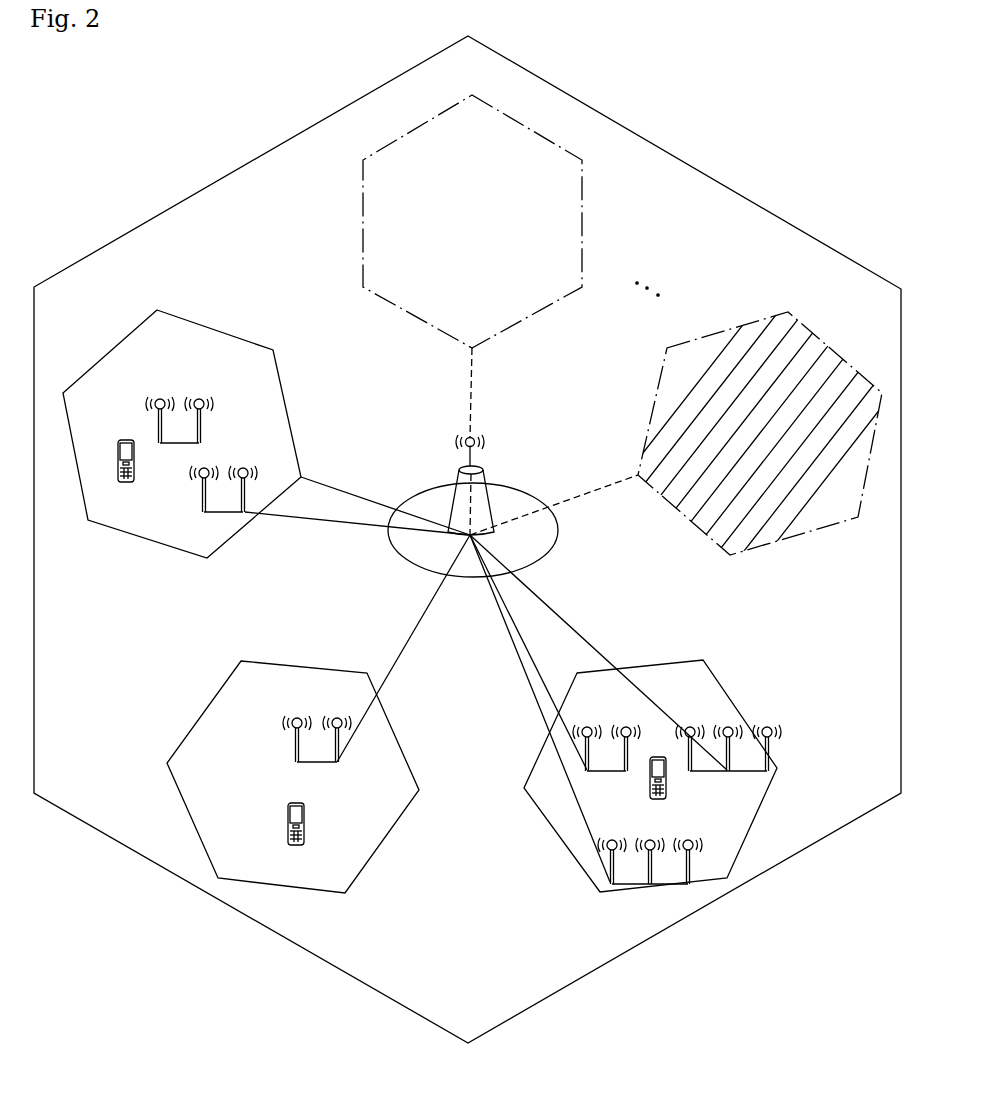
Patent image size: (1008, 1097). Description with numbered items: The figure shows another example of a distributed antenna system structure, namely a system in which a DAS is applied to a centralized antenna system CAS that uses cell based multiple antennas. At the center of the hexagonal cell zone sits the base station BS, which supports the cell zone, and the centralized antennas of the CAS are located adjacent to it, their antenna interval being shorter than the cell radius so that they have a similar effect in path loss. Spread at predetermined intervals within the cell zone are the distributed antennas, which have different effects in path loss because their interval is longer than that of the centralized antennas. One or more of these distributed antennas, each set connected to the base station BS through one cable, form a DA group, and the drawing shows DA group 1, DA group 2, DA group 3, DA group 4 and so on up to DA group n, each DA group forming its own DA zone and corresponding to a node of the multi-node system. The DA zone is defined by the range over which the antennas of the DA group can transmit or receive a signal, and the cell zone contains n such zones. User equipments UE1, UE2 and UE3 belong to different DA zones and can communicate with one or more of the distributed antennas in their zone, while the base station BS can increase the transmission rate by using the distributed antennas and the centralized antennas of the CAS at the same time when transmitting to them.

The base station BS is at (471, 441).
The centralized antenna system CAS is at (473, 530).
The user equipment UE1 is at (125, 475).
The user equipment UE2 is at (296, 839).
The user equipment UE3 is at (656, 792).
The DA group DA group 1 is at (182, 434).
The DA group DA group 2 is at (293, 777).
The DA group DA group 3 is at (652, 776).
The DA group DA group 4 is at (760, 433).
The DA group DA group n is at (472, 221).
The element DA zone is at (758, 548).